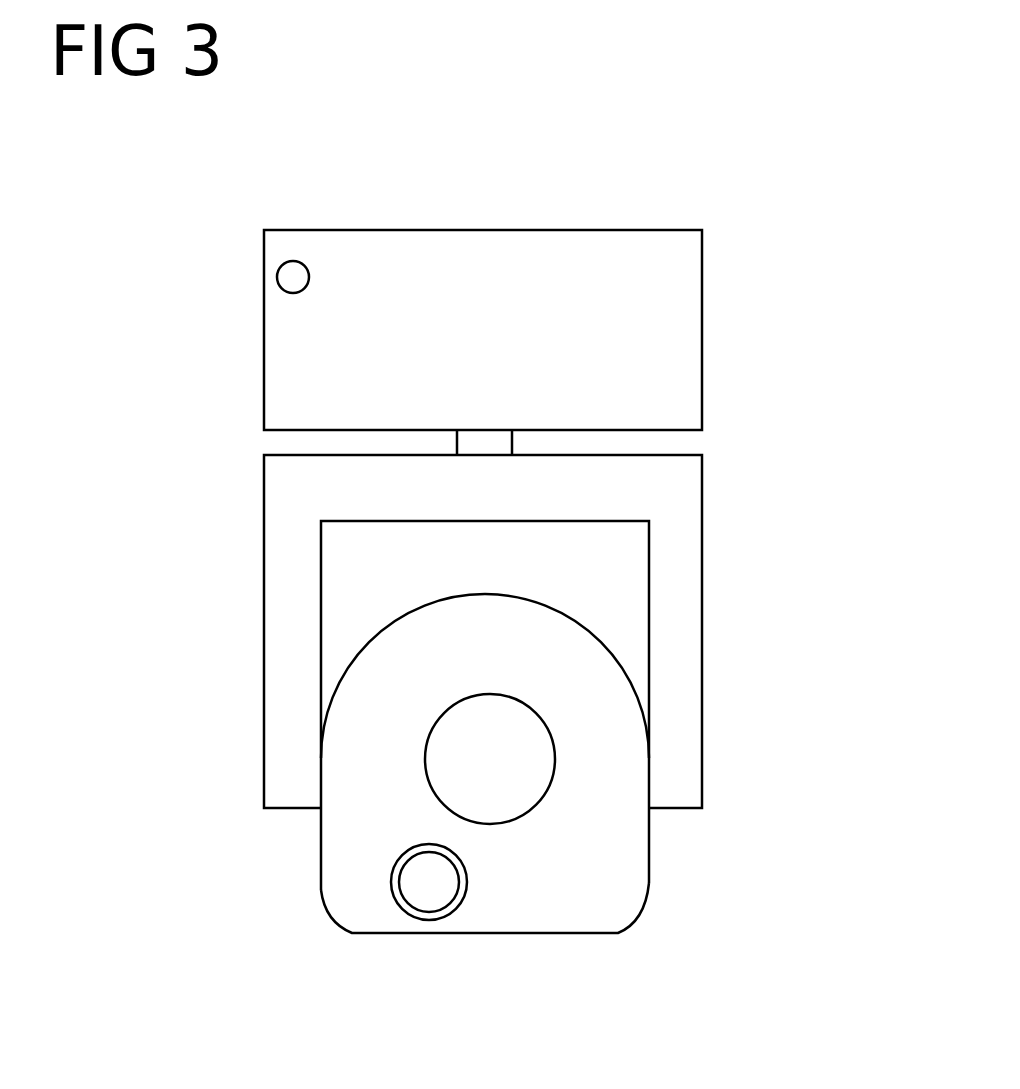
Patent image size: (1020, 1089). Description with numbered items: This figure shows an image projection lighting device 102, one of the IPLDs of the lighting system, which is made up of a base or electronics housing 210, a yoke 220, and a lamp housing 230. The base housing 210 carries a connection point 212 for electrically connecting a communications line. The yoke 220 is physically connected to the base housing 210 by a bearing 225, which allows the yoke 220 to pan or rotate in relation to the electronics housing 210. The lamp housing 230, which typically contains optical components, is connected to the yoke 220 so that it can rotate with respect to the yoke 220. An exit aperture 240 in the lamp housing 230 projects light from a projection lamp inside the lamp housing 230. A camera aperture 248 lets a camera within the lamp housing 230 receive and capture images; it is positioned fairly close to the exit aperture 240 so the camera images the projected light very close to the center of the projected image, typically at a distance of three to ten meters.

The image projection lighting device 102 is at (795, 302).
The base housing 210 is at (252, 383).
The connection point 212 is at (277, 276).
The yoke 220 is at (243, 645).
The bearing 225 is at (483, 437).
The lamp housing 230 is at (608, 628).
The exit aperture 240 is at (577, 767).
The camera aperture 248 is at (382, 898).